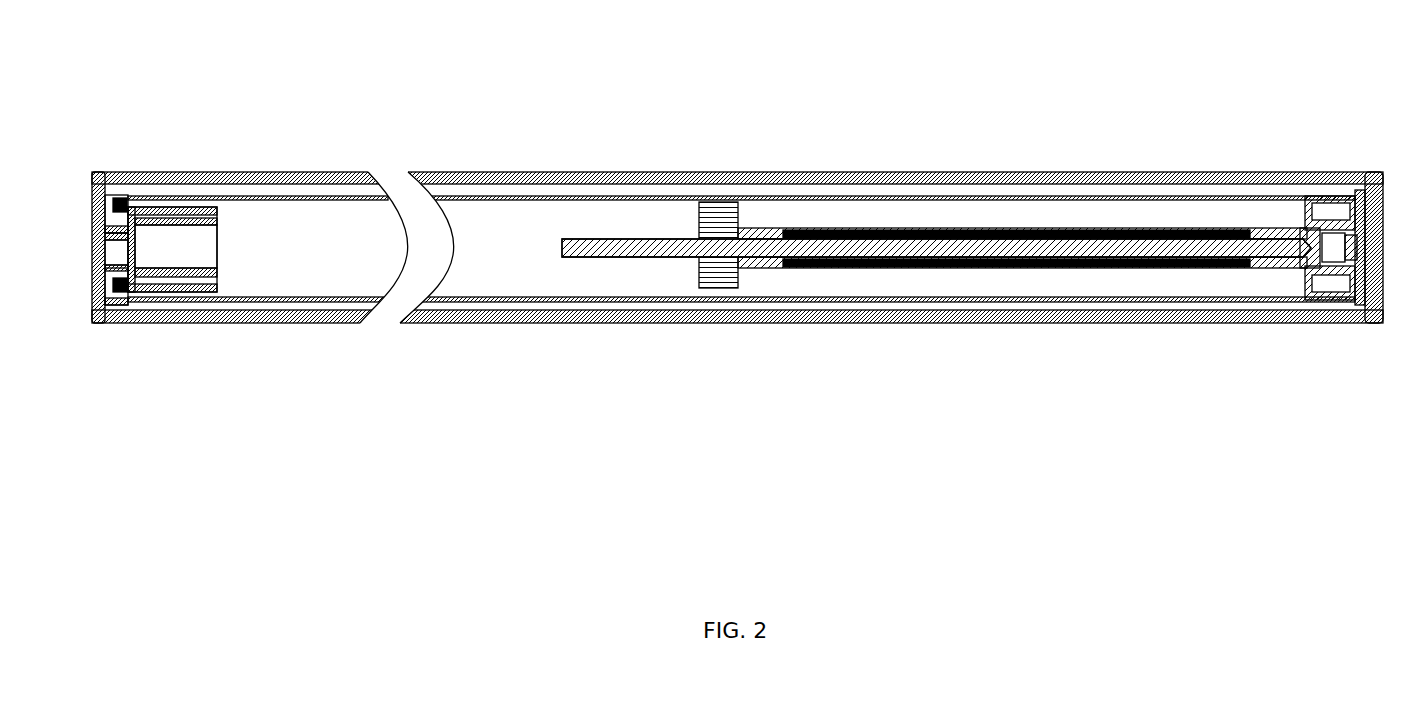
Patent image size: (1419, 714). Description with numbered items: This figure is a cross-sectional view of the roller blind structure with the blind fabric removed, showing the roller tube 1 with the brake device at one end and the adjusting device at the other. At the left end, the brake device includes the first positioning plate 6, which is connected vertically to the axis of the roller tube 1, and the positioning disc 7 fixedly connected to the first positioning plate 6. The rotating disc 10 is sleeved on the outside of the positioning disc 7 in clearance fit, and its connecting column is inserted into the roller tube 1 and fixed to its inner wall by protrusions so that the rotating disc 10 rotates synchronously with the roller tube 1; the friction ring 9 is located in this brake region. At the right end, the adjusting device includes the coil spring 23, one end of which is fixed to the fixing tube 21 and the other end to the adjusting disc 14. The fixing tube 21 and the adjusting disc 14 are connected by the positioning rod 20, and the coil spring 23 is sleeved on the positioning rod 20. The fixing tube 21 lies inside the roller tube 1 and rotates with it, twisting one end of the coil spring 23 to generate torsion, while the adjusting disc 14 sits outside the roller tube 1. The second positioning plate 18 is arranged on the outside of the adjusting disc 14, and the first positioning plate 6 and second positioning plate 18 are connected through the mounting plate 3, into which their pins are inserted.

The roller tube 1 is at (322, 195).
The mounting plate 3 is at (492, 180).
The first positioning plate 6 is at (104, 196).
The positioning disc 7 is at (120, 293).
The friction ring 9 is at (128, 203).
The rotating disc 10 is at (128, 298).
The adjusting disc 14 is at (1306, 230).
The second positioning plate 18 is at (1374, 195).
The positioning rod 20 is at (601, 238).
The fixing tube 21 is at (722, 205).
The coil spring 23 is at (832, 230).